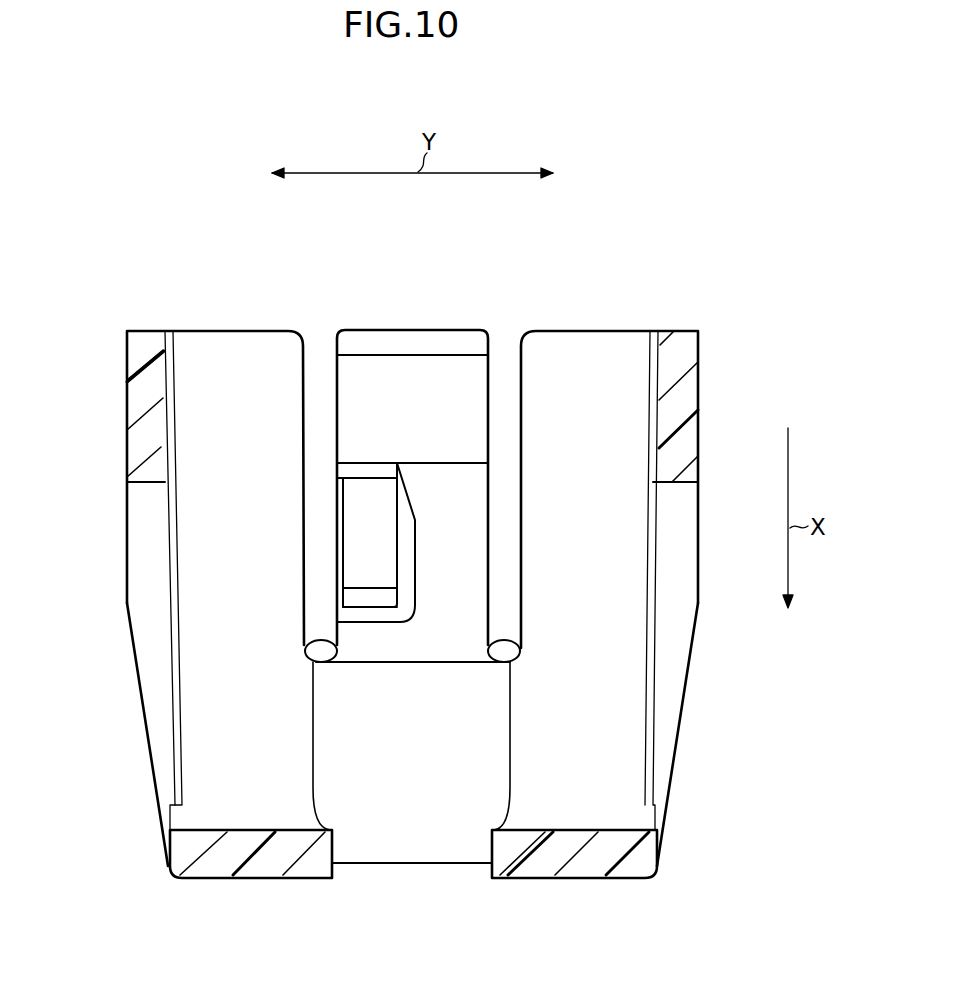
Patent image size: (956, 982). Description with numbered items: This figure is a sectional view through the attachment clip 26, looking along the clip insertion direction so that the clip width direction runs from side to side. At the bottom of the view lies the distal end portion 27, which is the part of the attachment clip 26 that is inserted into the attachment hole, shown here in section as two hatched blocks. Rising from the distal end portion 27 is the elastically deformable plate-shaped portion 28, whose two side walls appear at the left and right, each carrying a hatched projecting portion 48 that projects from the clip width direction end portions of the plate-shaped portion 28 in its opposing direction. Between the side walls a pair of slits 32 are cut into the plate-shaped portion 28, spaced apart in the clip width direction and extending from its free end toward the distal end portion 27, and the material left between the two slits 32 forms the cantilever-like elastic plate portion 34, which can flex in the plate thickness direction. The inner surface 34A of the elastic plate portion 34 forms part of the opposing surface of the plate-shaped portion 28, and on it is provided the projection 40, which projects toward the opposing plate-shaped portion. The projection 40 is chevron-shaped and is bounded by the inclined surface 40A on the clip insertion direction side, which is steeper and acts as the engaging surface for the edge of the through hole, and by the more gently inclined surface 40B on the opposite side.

The attachment clip 26 is at (709, 286).
The distal end portion 27 is at (556, 879).
The plate-shaped portion 28 is at (583, 331).
The slits 32 is at (305, 648).
The elastic plate portion 34 is at (431, 331).
The inner surface 34A is at (452, 536).
The projection 40 is at (400, 507).
The inclined surface 40A is at (367, 596).
The inclined surface 40B is at (365, 503).
The projecting portions 48 is at (127, 397).